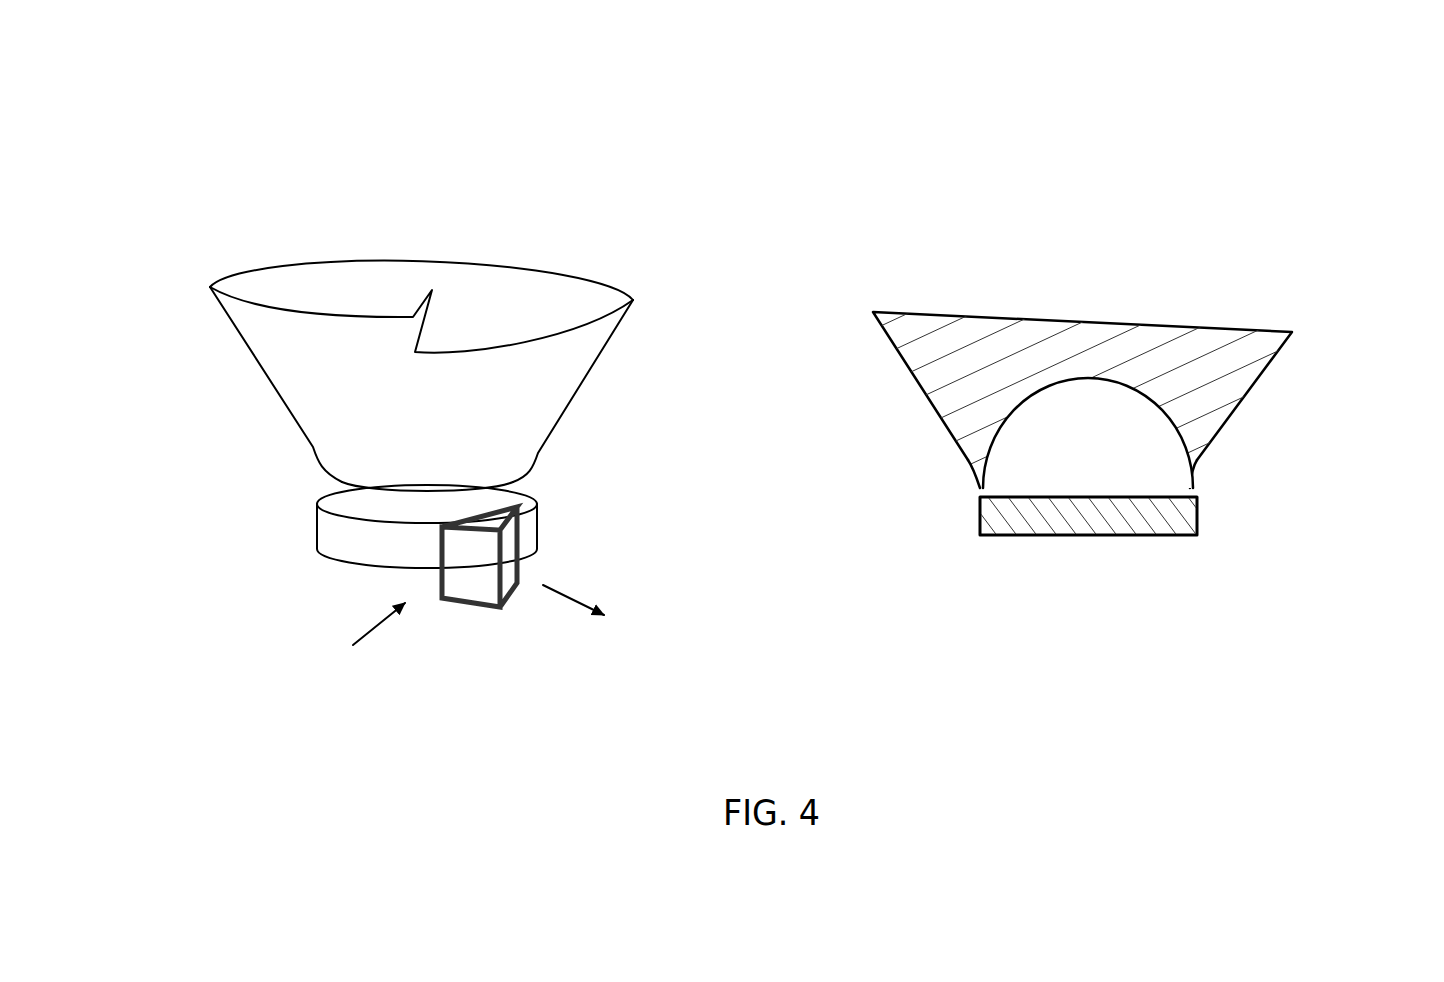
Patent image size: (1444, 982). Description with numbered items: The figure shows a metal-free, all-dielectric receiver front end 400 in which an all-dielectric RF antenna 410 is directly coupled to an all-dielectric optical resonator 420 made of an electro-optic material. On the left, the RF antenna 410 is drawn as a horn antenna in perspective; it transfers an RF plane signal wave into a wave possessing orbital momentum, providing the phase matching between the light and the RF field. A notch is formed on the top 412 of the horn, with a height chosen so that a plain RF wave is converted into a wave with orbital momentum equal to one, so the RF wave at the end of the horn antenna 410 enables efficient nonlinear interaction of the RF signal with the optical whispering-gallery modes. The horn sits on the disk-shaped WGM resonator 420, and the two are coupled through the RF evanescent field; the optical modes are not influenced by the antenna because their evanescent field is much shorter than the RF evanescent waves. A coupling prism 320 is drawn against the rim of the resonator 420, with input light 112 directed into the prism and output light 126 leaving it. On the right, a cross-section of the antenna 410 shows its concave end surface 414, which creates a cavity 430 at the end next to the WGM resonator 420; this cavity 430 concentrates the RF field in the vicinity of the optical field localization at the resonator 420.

The RF receiver / photonic RF antenna assembly 400 is at (465, 120).
The RF antenna 410 is at (1317, 462).
The top of the antenna 412 is at (365, 275).
The concave end surface 414 is at (1017, 403).
The optical resonator 420 is at (1177, 537).
The cavity 430 is at (1103, 455).
The coupling prism 320 is at (467, 598).
The input light 112 is at (342, 659).
The output light 126 is at (608, 650).